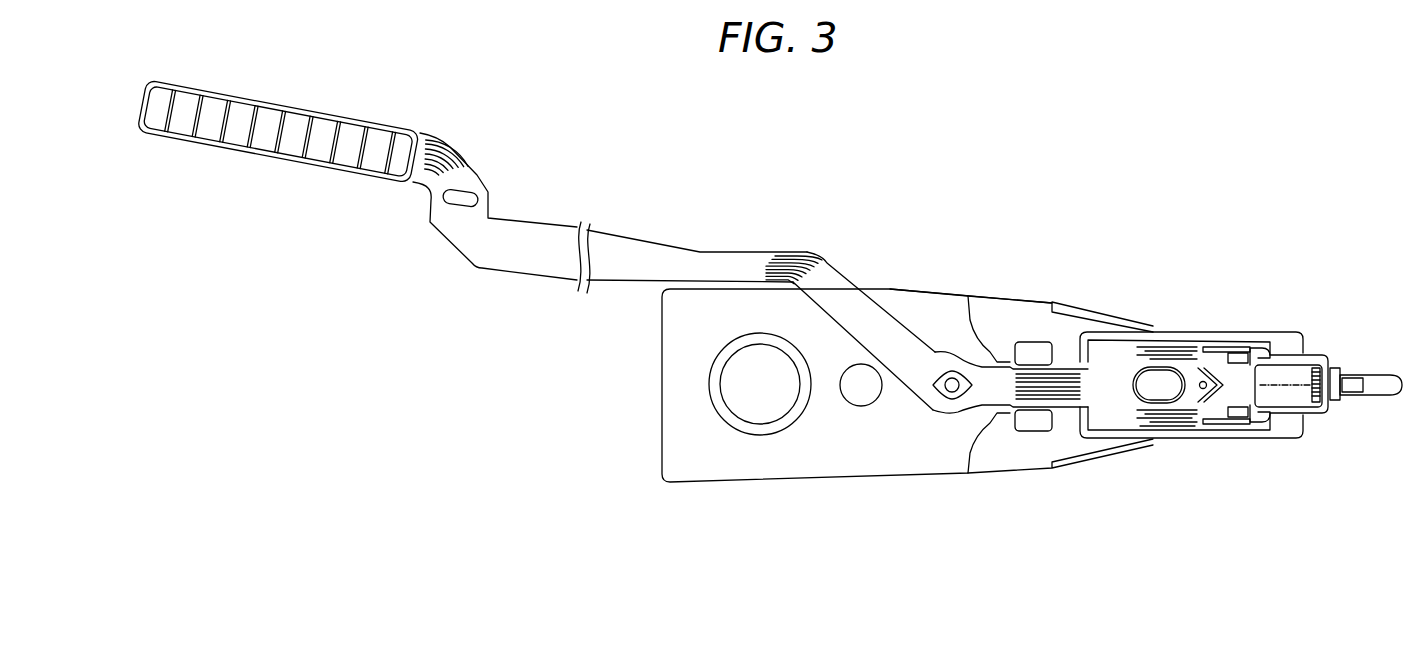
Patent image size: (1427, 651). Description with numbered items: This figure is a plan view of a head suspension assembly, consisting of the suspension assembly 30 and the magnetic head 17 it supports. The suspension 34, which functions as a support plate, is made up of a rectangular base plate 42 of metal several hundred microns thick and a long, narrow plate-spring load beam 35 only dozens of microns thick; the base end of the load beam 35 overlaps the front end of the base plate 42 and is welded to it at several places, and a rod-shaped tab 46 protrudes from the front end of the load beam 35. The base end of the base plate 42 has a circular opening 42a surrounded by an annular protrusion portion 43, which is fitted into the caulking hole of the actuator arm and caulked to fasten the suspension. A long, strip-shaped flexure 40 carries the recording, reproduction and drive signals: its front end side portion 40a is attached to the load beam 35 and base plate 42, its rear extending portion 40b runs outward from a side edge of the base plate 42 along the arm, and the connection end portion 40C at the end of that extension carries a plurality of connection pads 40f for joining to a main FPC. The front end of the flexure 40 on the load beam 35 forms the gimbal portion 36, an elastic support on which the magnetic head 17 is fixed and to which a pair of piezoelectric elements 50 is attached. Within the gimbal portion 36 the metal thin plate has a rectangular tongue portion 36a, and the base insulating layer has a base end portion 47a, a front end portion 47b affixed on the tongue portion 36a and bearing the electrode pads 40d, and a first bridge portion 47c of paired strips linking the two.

The suspension assembly 30 is at (1110, 223).
The flexure 40 is at (750, 273).
The connection end portion 40C is at (370, 127).
The connection pads 40f is at (268, 147).
The extending portion 40b is at (633, 258).
The front end side portion 40a is at (1043, 380).
The electrode pads 40d is at (1327, 390).
The suspension 34 is at (907, 433).
The base plate 42 is at (857, 415).
The circular opening 42a is at (760, 408).
The annular protrusion portion 43 is at (730, 420).
The load beam 35 is at (1060, 419).
The gimbal portion 36 is at (1246, 408).
The tongue portion 36a is at (1290, 345).
The base end portion of base insulating layer 47a is at (1175, 348).
The front end portion of base insulating layer 47b is at (1321, 372).
The first bridge portion 47c is at (1222, 348).
The piezoelectric elements 50 is at (1247, 355).
The tab 46 is at (1373, 382).
The magnetic head 17 is at (1287, 387).